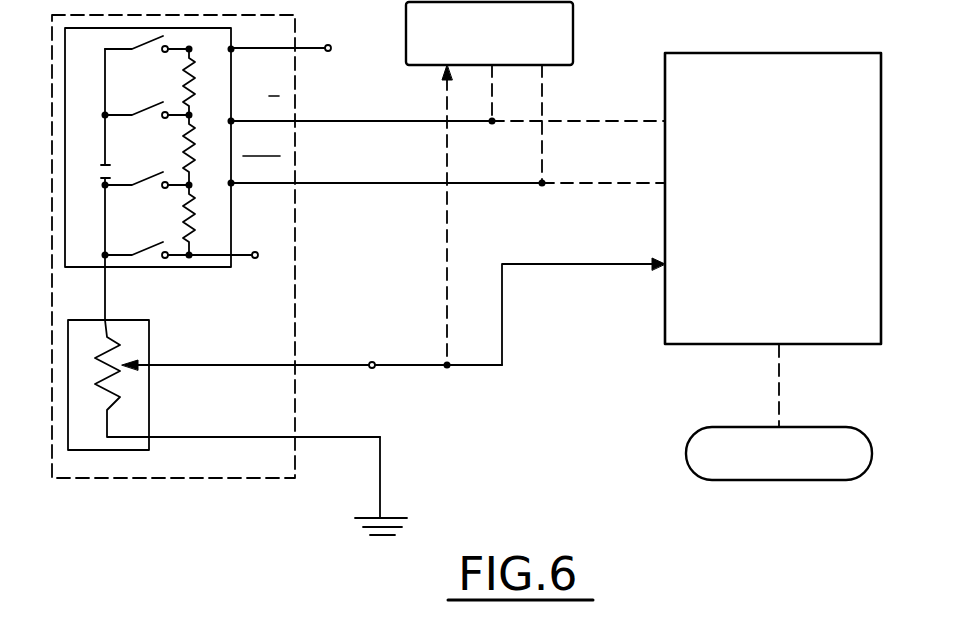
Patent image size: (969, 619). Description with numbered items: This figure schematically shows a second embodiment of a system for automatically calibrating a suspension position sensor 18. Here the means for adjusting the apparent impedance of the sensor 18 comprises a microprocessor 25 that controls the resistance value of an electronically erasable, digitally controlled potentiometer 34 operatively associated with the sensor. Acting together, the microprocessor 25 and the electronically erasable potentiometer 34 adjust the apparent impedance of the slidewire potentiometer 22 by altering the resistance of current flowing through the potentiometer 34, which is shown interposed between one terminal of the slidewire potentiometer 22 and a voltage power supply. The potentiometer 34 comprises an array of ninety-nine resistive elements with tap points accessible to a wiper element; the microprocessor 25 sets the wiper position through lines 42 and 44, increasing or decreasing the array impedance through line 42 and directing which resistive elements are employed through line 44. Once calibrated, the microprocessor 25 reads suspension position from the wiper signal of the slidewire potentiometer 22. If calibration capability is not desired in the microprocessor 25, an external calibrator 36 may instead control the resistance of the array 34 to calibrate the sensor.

The sensor 18 is at (296, 236).
The slidewire potentiometer 22 is at (150, 347).
The microprocessor 25 is at (665, 292).
The electronically erasable, digitally controlled potentiometer 34 is at (211, 267).
The external calibrator 36 is at (577, 22).
The line 42 is at (408, 108).
The line 44 is at (414, 169).